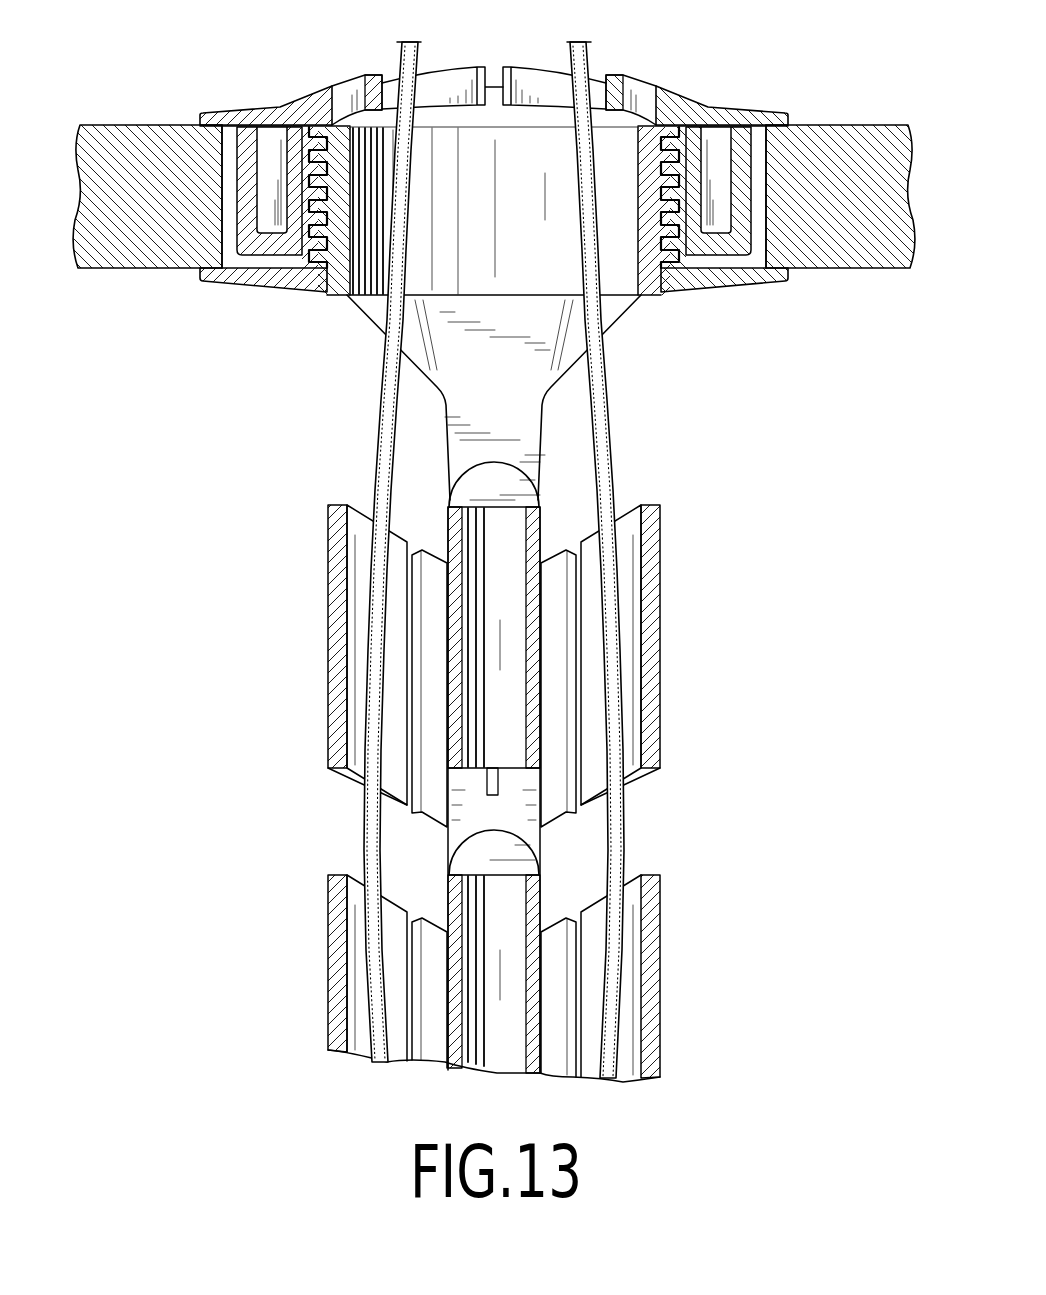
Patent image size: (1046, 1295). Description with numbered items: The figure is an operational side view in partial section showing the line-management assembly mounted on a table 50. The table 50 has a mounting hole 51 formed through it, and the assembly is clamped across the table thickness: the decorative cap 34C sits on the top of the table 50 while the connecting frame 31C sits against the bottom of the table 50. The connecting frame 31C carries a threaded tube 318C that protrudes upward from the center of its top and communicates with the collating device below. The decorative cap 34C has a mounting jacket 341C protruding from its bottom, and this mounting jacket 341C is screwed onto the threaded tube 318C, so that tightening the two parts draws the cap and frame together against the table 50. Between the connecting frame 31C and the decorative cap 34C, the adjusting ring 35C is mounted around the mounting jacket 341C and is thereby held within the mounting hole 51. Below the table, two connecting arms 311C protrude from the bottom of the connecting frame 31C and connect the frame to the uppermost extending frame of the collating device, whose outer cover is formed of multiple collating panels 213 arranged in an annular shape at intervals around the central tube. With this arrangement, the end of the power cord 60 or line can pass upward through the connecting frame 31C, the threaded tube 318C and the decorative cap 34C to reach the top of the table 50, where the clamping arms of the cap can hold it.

The table 50 is at (865, 117).
The mounting hole 51 is at (222, 148).
The power cord 60 is at (395, 55).
The decorative cap 34C is at (760, 117).
The mounting jacket 341C is at (677, 148).
The adjusting ring 35C is at (247, 247).
The threaded tube 318C is at (652, 237).
The connecting frame 31C is at (752, 278).
The connecting arm 311C is at (520, 434).
The collating panel 213 is at (650, 615).